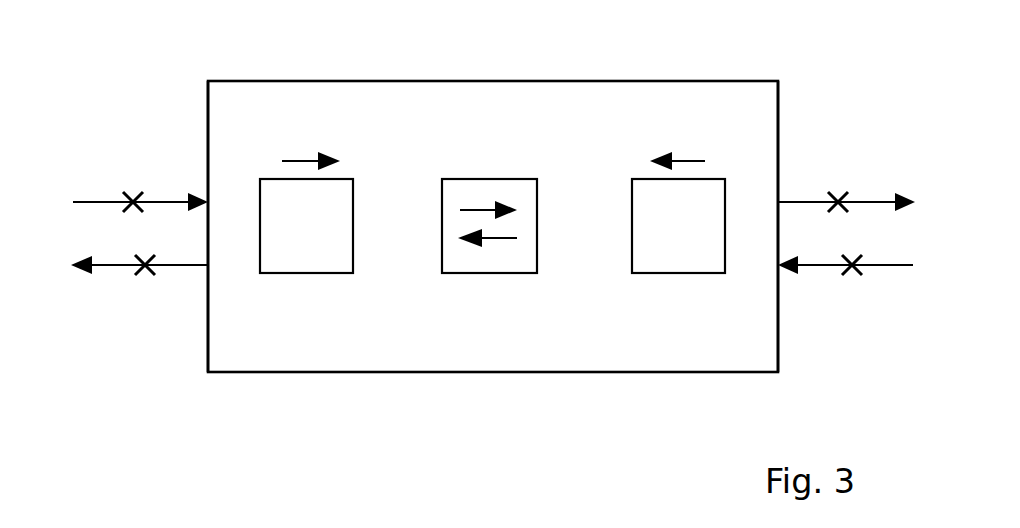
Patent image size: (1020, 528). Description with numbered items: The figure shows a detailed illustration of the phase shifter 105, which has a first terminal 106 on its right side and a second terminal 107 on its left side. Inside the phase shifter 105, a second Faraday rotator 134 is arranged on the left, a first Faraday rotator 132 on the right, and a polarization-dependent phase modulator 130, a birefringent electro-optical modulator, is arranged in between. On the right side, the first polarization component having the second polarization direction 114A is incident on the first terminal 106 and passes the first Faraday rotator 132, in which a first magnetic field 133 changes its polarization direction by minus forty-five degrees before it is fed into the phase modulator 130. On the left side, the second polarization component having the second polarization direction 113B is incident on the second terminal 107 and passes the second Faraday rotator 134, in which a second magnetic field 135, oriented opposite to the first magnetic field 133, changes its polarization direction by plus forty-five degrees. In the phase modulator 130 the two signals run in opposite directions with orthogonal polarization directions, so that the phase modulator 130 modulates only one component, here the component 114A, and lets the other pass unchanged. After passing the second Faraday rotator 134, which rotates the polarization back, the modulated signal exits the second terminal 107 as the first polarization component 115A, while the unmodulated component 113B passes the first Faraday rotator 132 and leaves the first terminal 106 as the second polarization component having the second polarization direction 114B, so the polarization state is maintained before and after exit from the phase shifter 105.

The phase shifter 105 is at (700, 81).
The first terminal 106 is at (778, 345).
The second terminal 107 is at (208, 343).
The second polarization component having the second polarization direction 113B is at (113, 200).
The first polarization component having the second polarization direction 115A is at (112, 265).
The second polarization component having the second polarization direction 114B is at (860, 202).
The first polarization component having the second polarization direction 114A is at (887, 265).
The second Faraday rotator 134 is at (310, 273).
The second magnetic field 135 is at (300, 160).
The polarization-dependent phase modulator 130 is at (483, 273).
The first Faraday rotator 132 is at (653, 273).
The first magnetic field 133 is at (700, 160).